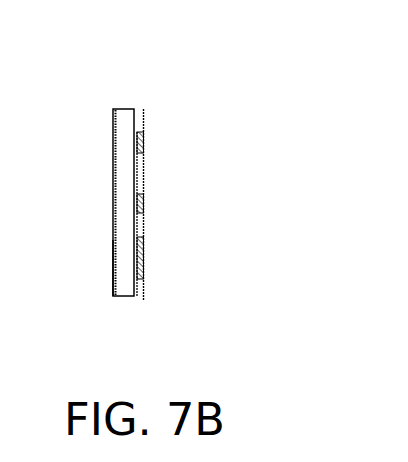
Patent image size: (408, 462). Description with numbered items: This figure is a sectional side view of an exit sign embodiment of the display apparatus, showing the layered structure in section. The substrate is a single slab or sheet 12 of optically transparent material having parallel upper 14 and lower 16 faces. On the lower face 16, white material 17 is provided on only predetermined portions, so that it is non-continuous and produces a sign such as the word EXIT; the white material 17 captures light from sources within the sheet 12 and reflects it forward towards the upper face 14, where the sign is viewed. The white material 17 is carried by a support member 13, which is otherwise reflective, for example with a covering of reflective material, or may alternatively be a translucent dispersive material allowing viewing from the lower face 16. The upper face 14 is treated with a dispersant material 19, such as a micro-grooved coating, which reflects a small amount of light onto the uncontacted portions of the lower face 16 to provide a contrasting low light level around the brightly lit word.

The sheet 12 is at (125, 112).
The support member 13 is at (144, 300).
The upper face 14 is at (112, 252).
The lower face 16 is at (146, 122).
The white material 17 is at (143, 150).
The dispersant material 19 is at (111, 158).